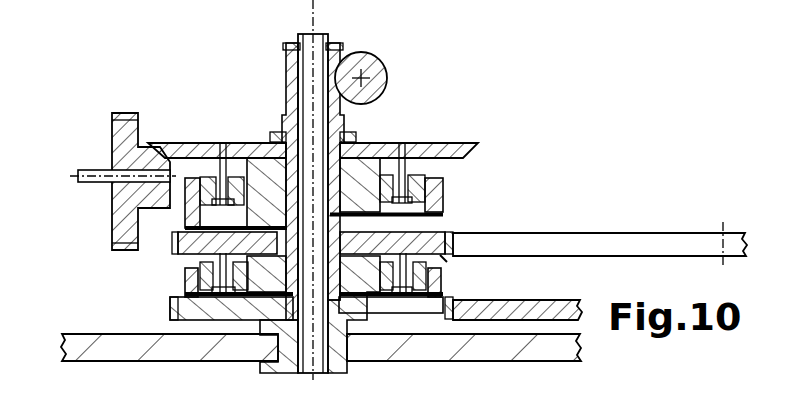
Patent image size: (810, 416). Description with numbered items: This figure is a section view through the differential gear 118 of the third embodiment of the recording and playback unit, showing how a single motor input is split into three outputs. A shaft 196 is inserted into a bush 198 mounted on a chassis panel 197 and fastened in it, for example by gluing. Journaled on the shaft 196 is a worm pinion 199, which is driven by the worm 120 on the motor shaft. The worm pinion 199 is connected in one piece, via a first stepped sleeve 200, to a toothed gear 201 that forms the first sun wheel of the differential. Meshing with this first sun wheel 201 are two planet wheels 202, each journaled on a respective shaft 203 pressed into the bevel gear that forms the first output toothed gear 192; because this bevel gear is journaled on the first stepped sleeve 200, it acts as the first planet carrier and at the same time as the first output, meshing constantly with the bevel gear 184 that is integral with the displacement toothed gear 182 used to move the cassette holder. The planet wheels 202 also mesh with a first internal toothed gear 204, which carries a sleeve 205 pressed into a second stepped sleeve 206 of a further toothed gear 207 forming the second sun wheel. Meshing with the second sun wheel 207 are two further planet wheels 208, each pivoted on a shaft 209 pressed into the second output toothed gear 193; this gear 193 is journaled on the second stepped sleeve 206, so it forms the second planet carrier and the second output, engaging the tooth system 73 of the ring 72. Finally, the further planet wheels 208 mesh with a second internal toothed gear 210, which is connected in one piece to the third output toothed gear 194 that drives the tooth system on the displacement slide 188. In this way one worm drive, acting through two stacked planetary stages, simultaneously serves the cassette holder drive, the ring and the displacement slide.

The shaft 196 is at (314, 30).
The worm pinion 199 is at (284, 72).
The worm 120 is at (372, 60).
The displacement toothed gear 182 is at (128, 112).
The bevel gear 184 is at (160, 212).
The first output toothed gear 192 is at (177, 143).
The planet wheels 202 is at (272, 150).
The first stepped sleeve 200 is at (340, 162).
The shaft 203 is at (221, 152).
The toothed gear 201 is at (372, 165).
The first internal toothed gear 204 is at (443, 185).
The differential gear 118 is at (502, 186).
The shaft 209 is at (185, 258).
The second output toothed gear 193 is at (452, 233).
The ring 72 is at (630, 242).
The tooth system 73 is at (442, 258).
The hub 198 is at (340, 370).
The sleeve 205 is at (335, 258).
The toothed gear 207 is at (242, 285).
The second stepped sleeve 206 is at (262, 278).
The second internal toothed gear 210 is at (185, 275).
The further planet wheels 208 is at (205, 292).
The third output toothed gear 194 is at (192, 308).
The displacement slide 188 is at (525, 300).
The chassis panel 197 is at (462, 353).